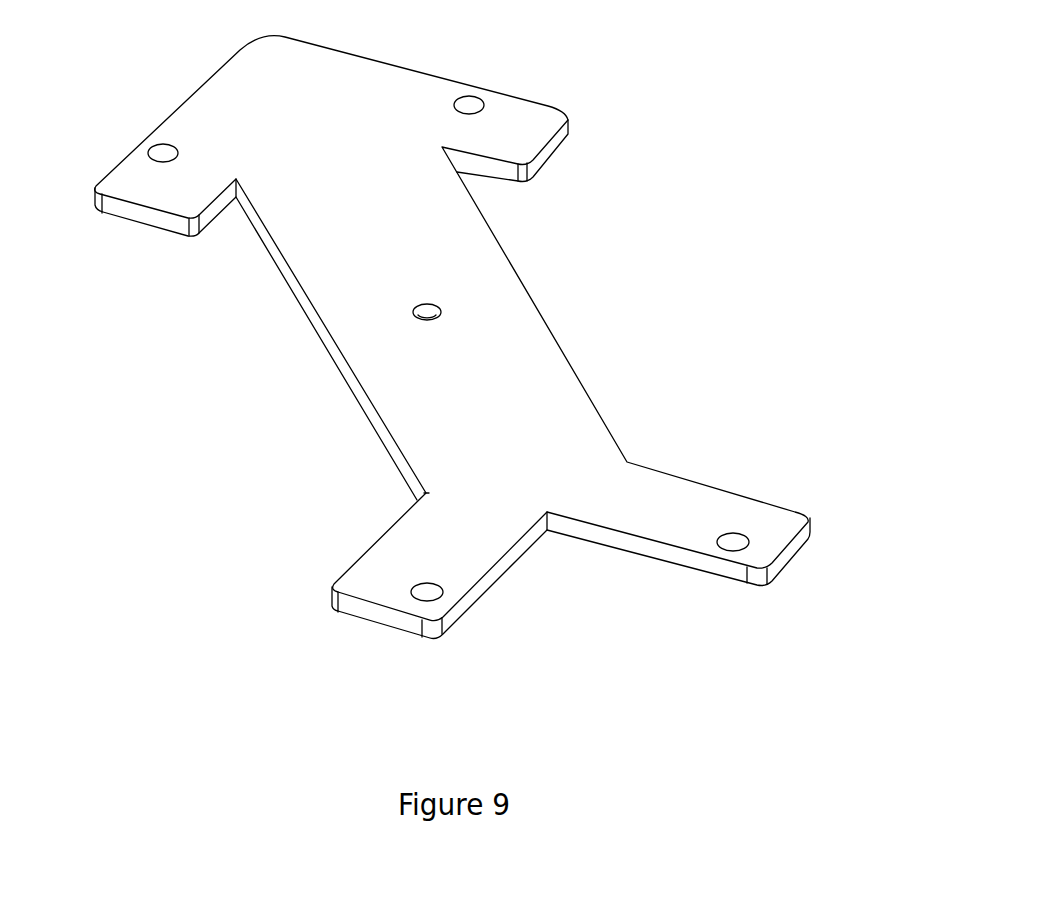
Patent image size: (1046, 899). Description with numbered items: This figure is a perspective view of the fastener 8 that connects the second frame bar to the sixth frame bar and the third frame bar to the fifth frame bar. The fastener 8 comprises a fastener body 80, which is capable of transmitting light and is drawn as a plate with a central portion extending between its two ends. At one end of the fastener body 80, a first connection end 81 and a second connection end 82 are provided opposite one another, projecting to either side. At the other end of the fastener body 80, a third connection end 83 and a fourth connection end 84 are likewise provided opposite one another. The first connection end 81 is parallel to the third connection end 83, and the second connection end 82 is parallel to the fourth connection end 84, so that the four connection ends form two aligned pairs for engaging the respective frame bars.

The fastener 8 is at (460, 374).
The fastener body 80 is at (518, 342).
The first connection end 81 is at (134, 182).
The second connection end 82 is at (518, 122).
The third connection end 83 is at (380, 583).
The fourth connection end 84 is at (768, 525).